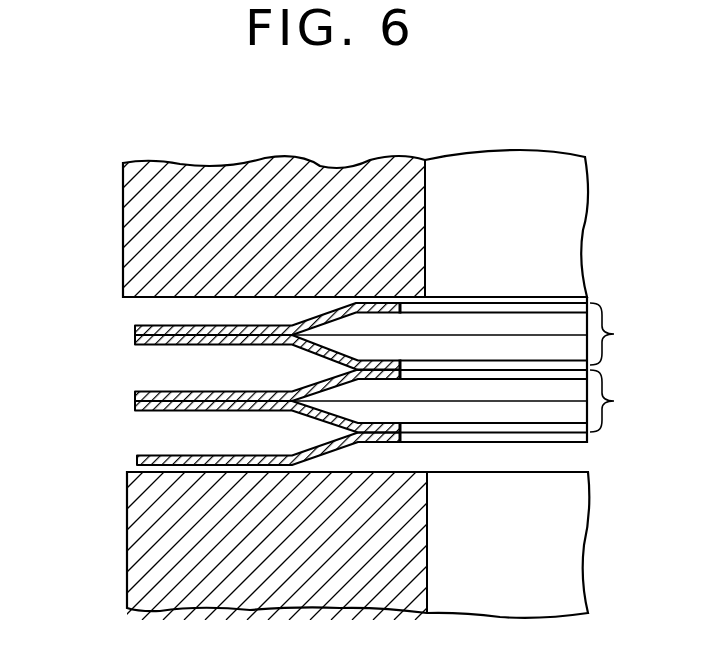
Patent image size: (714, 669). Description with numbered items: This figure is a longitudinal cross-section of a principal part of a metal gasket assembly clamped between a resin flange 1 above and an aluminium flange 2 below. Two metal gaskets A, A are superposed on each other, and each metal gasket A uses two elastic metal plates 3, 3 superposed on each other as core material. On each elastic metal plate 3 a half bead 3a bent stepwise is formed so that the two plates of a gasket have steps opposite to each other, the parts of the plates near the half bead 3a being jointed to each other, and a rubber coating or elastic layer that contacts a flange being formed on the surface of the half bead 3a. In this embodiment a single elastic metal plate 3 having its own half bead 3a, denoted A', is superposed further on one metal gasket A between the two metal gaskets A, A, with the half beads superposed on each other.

The resin flange 1 is at (173, 178).
The aluminium flange 2 is at (184, 595).
The elastic metal plate 3 is at (134, 341).
The half bead 3a is at (347, 345).
The metal gasket A is at (615, 367).
The single elastic metal plate with half bead A' is at (602, 463).